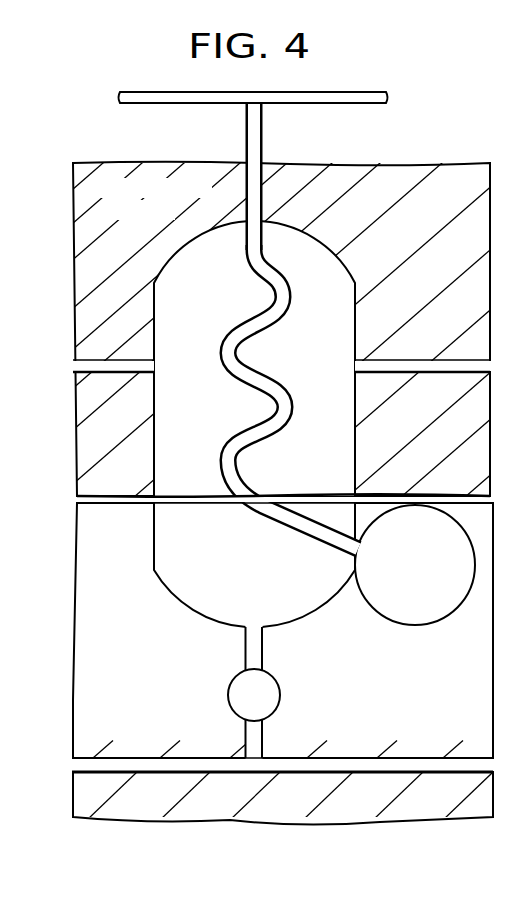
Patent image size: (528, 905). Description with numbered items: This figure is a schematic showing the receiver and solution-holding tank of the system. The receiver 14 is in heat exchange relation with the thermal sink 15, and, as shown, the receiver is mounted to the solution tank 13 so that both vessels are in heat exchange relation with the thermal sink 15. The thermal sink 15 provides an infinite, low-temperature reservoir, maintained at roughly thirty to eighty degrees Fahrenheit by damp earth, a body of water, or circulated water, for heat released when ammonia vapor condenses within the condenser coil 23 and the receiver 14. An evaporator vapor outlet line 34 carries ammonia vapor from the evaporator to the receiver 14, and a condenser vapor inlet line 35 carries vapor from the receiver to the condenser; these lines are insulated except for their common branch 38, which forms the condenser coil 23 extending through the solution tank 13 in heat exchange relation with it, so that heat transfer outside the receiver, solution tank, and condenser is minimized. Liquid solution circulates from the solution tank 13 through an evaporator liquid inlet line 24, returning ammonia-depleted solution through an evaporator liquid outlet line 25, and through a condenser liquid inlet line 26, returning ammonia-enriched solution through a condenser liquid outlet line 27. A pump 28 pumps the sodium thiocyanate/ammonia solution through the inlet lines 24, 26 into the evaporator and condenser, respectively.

The solution tank 13 is at (193, 346).
The receiver 14 is at (420, 588).
The thermal sink 15 is at (140, 249).
The condenser coil 23 is at (283, 427).
The evaporator liquid inlet line 24 is at (168, 763).
The evaporator liquid outlet line 25 is at (95, 362).
The condenser liquid inlet line 26 is at (353, 766).
The condenser liquid outlet line 27 is at (409, 360).
The pump 28 is at (280, 688).
The evaporator vapor outlet line 34 is at (151, 92).
The condenser vapor inlet line 35 is at (341, 92).
The common branch 38 is at (262, 129).